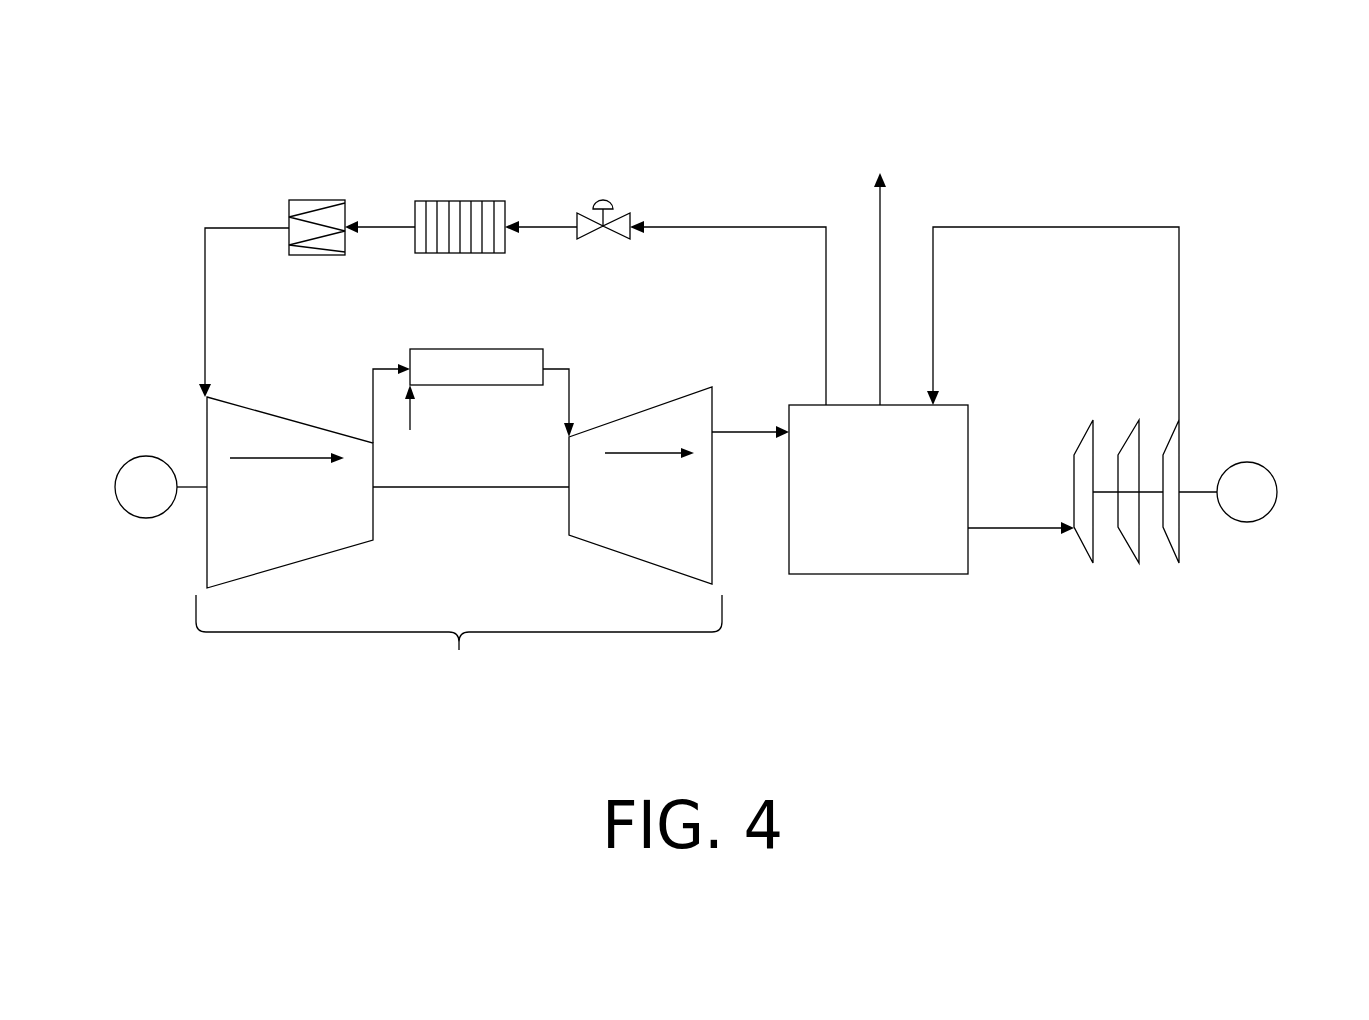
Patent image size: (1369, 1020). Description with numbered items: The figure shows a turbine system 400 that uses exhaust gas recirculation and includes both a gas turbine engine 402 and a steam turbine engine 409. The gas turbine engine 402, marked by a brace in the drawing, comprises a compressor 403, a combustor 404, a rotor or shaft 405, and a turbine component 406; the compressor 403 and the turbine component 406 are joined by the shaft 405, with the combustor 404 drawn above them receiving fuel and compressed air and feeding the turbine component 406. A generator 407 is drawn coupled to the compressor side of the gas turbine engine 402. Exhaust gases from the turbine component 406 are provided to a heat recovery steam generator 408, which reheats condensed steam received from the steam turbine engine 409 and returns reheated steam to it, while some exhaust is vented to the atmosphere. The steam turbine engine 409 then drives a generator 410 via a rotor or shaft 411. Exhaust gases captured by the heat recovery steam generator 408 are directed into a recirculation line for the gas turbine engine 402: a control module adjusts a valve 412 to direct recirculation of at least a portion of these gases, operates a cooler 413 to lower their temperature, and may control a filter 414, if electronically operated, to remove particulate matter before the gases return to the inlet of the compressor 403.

The turbine system 400 is at (220, 138).
The gas turbine engine 402 is at (459, 537).
The compressor 403 is at (290, 492).
The combustor 404 is at (475, 349).
The shaft 405 is at (470, 488).
The turbine component 406 is at (640, 485).
The generator 407 is at (115, 493).
The heat recovery steam generator 408 is at (878, 489).
The steam turbine engine 409 is at (1128, 517).
The generator 410 is at (1277, 505).
The shaft 411 is at (1197, 492).
The valve 412 is at (603, 191).
The cooler 413 is at (460, 198).
The filter 414 is at (317, 199).